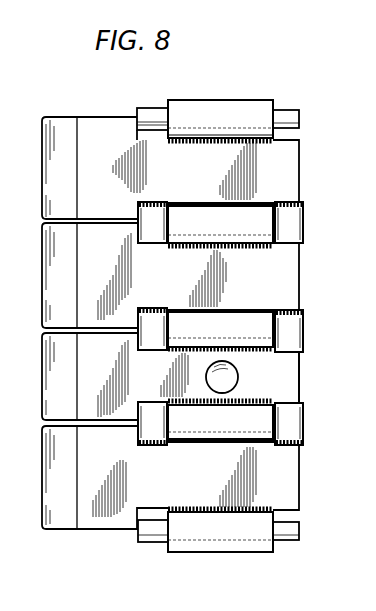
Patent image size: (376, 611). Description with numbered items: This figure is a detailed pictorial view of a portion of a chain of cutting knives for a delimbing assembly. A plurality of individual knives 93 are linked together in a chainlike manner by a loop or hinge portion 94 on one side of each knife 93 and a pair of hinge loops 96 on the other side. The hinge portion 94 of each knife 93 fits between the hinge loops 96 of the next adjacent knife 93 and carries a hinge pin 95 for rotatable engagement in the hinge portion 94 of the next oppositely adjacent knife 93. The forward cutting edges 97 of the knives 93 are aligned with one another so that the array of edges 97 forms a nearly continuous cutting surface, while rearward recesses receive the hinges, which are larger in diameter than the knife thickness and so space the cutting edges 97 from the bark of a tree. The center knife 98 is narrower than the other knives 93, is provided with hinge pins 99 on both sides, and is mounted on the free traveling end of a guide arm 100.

The knife 93 is at (302, 176).
The hinge portion 94 is at (236, 100).
The hinge pin 95 is at (291, 108).
The hinge loops 96 is at (155, 203).
The cutting edge 97 is at (77, 165).
The center knife 98 is at (300, 378).
The hinge pins 99 is at (236, 310).
The guide arm 100 is at (238, 377).